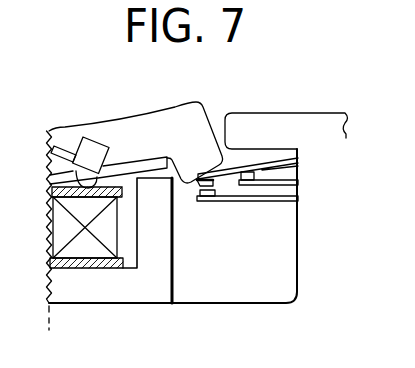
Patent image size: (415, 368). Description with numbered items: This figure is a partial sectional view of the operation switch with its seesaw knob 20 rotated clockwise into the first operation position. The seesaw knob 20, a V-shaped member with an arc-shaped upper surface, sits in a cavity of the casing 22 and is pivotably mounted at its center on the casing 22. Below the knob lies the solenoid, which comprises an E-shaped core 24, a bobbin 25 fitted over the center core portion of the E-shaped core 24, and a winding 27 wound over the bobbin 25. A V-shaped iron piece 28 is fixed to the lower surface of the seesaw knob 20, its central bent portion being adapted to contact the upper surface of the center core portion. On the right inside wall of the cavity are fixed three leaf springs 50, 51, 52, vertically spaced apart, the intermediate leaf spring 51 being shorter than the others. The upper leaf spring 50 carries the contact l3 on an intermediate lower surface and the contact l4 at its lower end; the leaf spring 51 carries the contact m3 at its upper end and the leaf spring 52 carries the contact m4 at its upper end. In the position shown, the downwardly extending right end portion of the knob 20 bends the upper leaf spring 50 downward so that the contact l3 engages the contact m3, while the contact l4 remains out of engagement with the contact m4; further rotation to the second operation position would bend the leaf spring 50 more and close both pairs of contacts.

The seesaw knob 20 is at (190, 120).
The casing 22 is at (327, 128).
The E-shaped core 24 is at (158, 293).
The bobbin 25 is at (117, 268).
The winding 27 is at (82, 252).
The V-shaped iron piece 28 is at (147, 163).
The upper leaf spring 50 is at (297, 160).
The intermediate leaf spring 51 is at (297, 177).
The lower leaf spring 52 is at (295, 200).
The contact l3 is at (267, 182).
The contact l4 is at (198, 183).
The contact m3 is at (254, 184).
The contact m4 is at (216, 197).